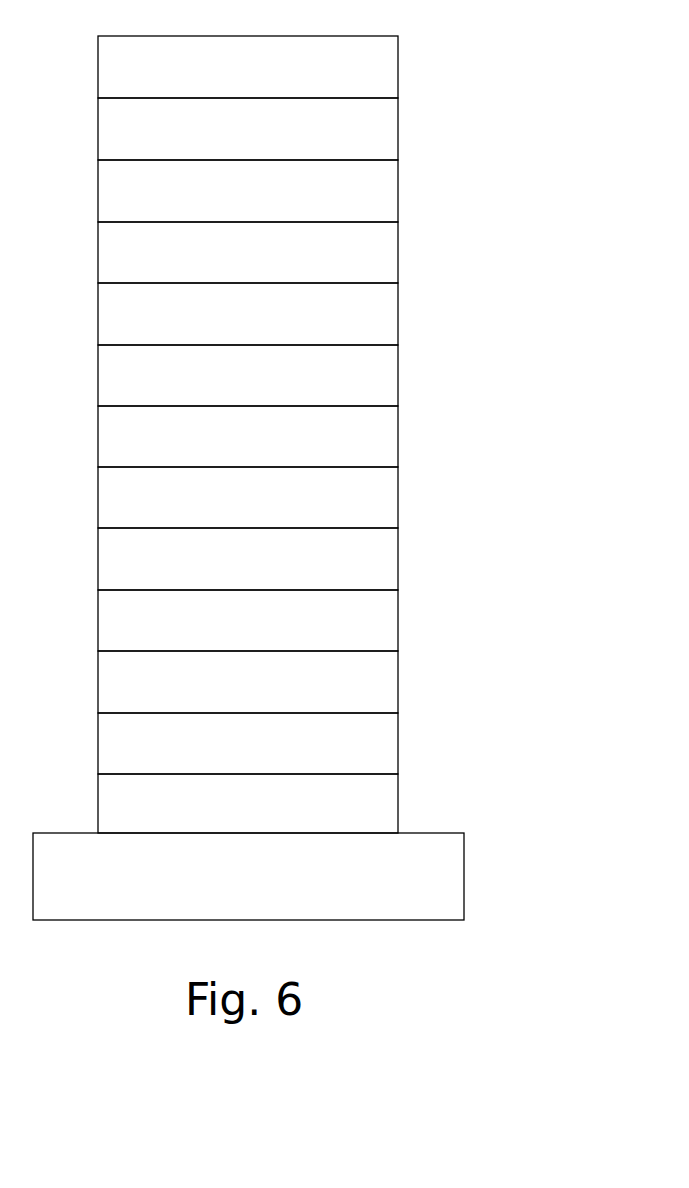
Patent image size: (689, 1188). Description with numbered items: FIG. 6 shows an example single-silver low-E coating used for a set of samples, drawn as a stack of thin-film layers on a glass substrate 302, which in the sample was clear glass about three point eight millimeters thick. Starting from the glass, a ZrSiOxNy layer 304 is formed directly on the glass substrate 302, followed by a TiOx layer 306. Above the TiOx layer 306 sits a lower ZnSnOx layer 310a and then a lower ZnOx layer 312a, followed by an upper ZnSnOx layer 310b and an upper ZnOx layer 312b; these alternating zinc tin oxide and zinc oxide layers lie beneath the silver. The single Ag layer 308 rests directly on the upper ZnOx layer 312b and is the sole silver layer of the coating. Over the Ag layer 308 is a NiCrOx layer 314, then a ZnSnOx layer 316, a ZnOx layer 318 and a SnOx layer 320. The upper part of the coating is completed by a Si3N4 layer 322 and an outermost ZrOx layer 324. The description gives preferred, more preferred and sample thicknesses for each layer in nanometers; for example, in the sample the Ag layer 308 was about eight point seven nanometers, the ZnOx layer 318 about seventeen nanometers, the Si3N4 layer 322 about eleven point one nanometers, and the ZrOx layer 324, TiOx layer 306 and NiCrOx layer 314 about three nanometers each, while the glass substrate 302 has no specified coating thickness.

The glass substrate 302 is at (450, 874).
The ZrSiOxNy layer 304 is at (398, 812).
The TiOx layer 306 is at (398, 746).
The ZnSnOx layer 310a is at (398, 684).
The ZnOx layer 312a is at (398, 622).
The ZnSnOx layer 310b is at (398, 561).
The ZnOx layer 312b is at (398, 500).
The Ag layer 308 is at (398, 438).
The NiCrOx layer 314 is at (398, 378).
The ZnSnOx layer 316 is at (398, 316).
The ZnOx layer 318 is at (398, 254).
The SnOx layer 320 is at (398, 193).
The Si3N4 layer 322 is at (398, 131).
The ZrOx layer 324 is at (398, 69).